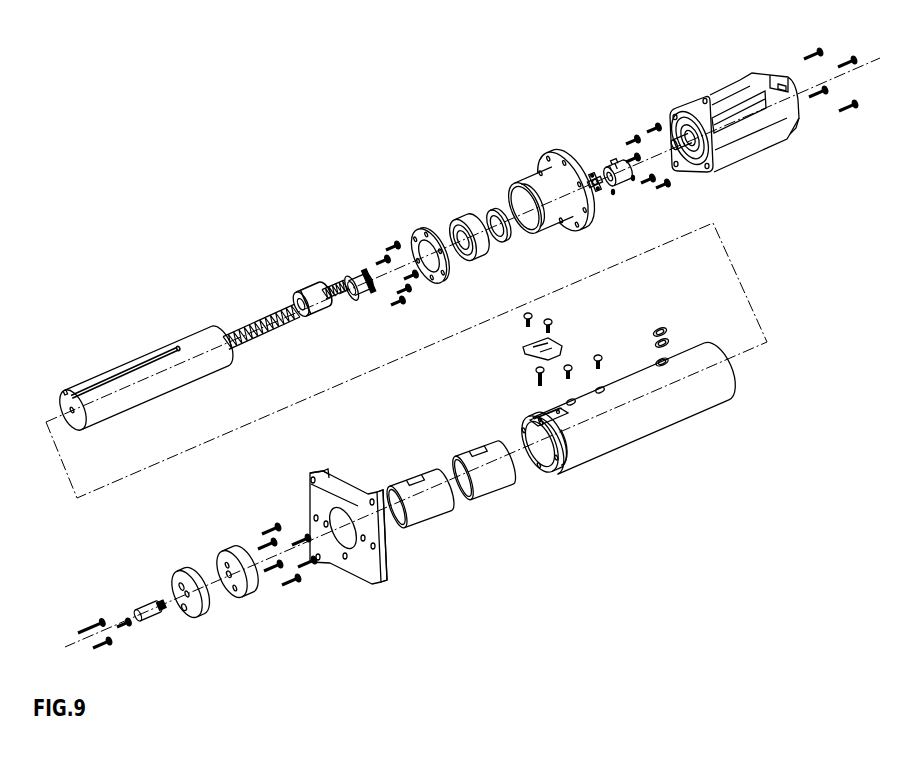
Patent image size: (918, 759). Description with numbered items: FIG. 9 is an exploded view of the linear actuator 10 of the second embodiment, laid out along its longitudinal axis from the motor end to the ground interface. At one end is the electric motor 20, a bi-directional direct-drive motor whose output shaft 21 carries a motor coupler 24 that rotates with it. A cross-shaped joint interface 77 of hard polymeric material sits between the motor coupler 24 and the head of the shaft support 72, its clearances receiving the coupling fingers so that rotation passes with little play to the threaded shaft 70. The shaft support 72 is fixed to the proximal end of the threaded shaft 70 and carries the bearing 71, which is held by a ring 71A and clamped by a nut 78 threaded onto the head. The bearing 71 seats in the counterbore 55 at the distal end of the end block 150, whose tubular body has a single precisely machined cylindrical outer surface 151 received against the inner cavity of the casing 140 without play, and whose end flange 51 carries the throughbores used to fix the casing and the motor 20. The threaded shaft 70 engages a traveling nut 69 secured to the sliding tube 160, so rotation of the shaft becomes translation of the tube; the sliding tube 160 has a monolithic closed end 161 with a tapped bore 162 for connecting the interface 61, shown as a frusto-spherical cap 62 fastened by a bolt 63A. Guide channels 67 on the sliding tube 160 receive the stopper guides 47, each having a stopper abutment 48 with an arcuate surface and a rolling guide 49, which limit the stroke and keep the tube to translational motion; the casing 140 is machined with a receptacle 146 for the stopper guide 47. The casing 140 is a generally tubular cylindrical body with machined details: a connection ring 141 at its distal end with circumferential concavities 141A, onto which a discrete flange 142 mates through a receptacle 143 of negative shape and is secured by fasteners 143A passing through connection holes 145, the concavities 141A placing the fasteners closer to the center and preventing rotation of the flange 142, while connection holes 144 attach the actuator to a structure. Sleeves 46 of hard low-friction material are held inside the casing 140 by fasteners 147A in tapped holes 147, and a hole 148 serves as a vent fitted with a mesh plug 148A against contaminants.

The linear actuator 10 is at (365, 185).
The electric motor 20 is at (710, 86).
The output shaft 21 is at (684, 163).
The motor coupler 24 is at (624, 186).
The joint interface 77 is at (594, 174).
The end block 150 is at (524, 174).
The cylindrical outer surface 151 is at (547, 228).
The end flange 51 is at (580, 231).
The counterbore 55 is at (504, 209).
The nut 78 is at (502, 241).
The bearing 71 is at (472, 258).
The ring 71A is at (444, 265).
The shaft support 72 is at (356, 272).
The traveling nut 69 is at (322, 312).
The threaded shaft 70 is at (248, 343).
The guide channels 67 is at (118, 362).
The sliding tube 160 is at (168, 388).
The closed end 161 is at (80, 430).
The tapped bore 162 is at (70, 413).
The stopper abutment 48 is at (553, 350).
The stopper guides 47 is at (522, 328).
The rolling guide 49 is at (536, 380).
The fasteners 147A is at (600, 357).
The hole 148 is at (657, 360).
The mesh plug 148A is at (672, 336).
The receptacle 146 is at (530, 419).
The casing 140 is at (683, 407).
The holes 147 is at (573, 408).
The connection ring 141 is at (546, 478).
The circumferential concavities 141A is at (562, 455).
The sleeve 46 is at (505, 492).
The connection holes 145 is at (306, 479).
The flange 142 is at (389, 553).
The receptacle 143 is at (345, 542).
The connection holes 144 is at (380, 582).
The fasteners 143A is at (312, 586).
The interface 61 is at (197, 555).
The frusto-spherical cap 62 is at (188, 620).
The bolt 63A is at (152, 620).